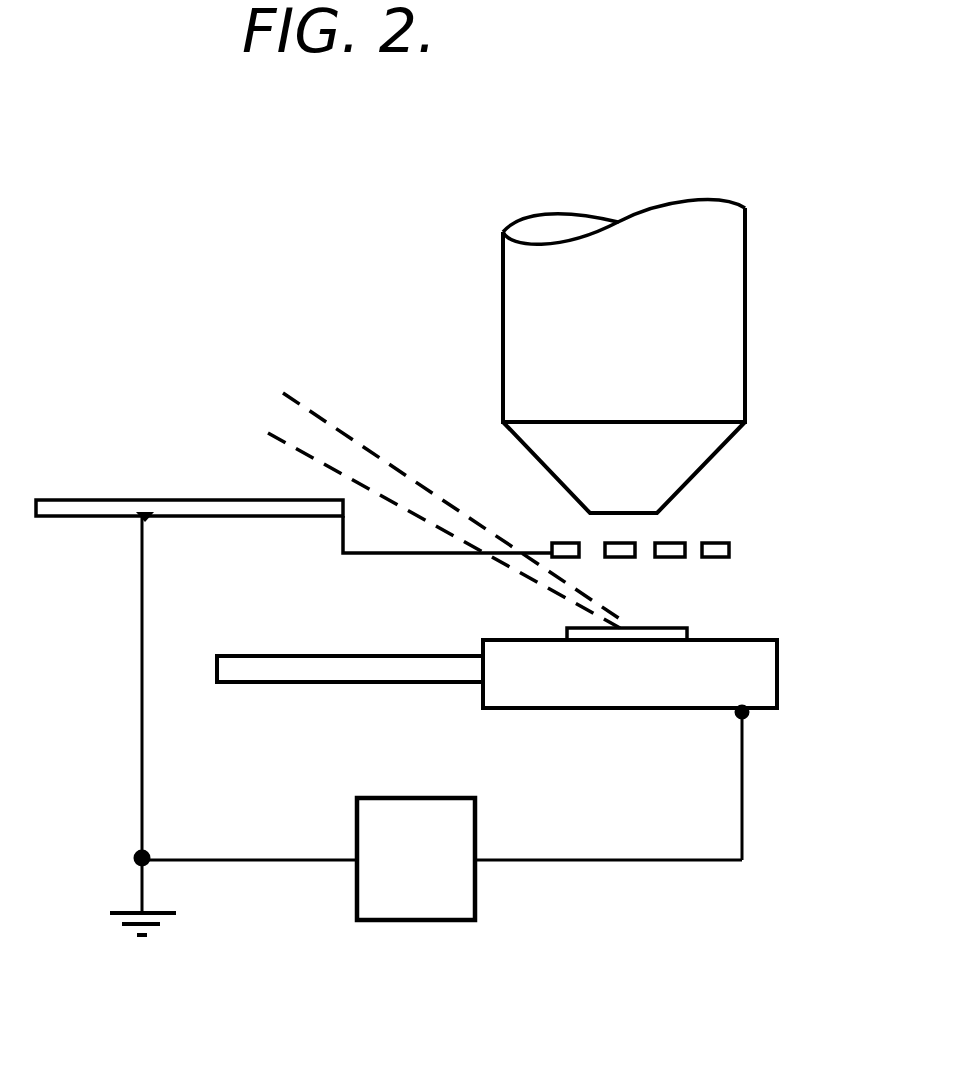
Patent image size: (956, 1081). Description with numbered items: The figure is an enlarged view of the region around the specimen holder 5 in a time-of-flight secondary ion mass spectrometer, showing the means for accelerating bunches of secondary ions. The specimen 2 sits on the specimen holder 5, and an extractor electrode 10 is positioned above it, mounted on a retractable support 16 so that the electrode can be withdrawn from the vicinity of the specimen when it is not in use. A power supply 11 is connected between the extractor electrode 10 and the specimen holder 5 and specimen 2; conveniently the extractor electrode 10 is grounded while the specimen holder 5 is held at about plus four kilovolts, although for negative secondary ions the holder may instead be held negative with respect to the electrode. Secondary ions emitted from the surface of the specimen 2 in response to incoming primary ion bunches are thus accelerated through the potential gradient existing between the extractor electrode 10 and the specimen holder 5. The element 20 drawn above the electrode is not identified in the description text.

The hopper 20 is at (720, 305).
The extractor electrode 10 is at (714, 543).
The retractable support 16 is at (176, 500).
The specimen 2 is at (684, 628).
The specimen holder 5 is at (757, 668).
The power supply 11 is at (432, 876).